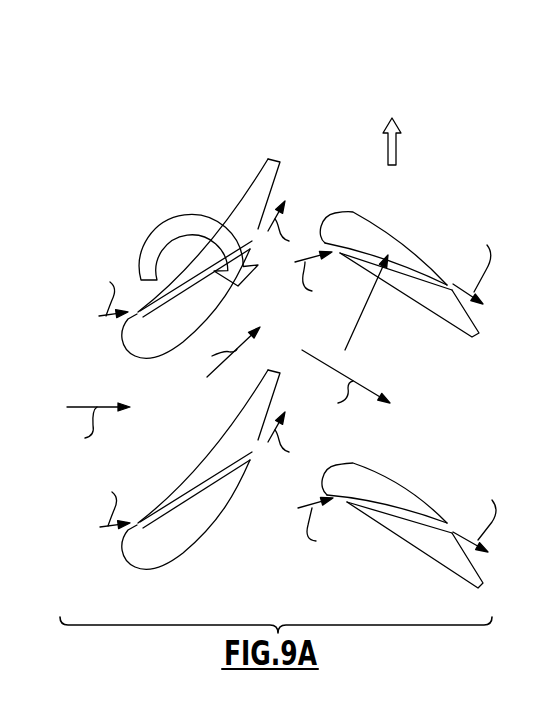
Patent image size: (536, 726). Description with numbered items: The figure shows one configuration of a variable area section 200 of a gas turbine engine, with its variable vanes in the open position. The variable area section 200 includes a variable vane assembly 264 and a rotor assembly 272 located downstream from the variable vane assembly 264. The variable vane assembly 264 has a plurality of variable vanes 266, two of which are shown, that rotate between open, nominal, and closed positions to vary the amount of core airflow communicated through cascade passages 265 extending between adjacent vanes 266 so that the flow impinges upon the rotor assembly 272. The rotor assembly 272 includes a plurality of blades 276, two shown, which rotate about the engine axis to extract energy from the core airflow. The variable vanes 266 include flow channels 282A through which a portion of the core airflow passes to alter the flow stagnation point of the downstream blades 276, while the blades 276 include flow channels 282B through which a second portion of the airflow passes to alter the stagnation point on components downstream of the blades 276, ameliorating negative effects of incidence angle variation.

The variable area section 200 is at (320, 134).
The variable vane assembly 264 is at (178, 172).
The cascade passages 265 is at (190, 401).
The variable vanes 266 is at (228, 220).
The rotor assembly 272 is at (416, 214).
The blades 276 is at (373, 233).
The flow channels 282A is at (182, 297).
The flow channels 282B is at (410, 267).